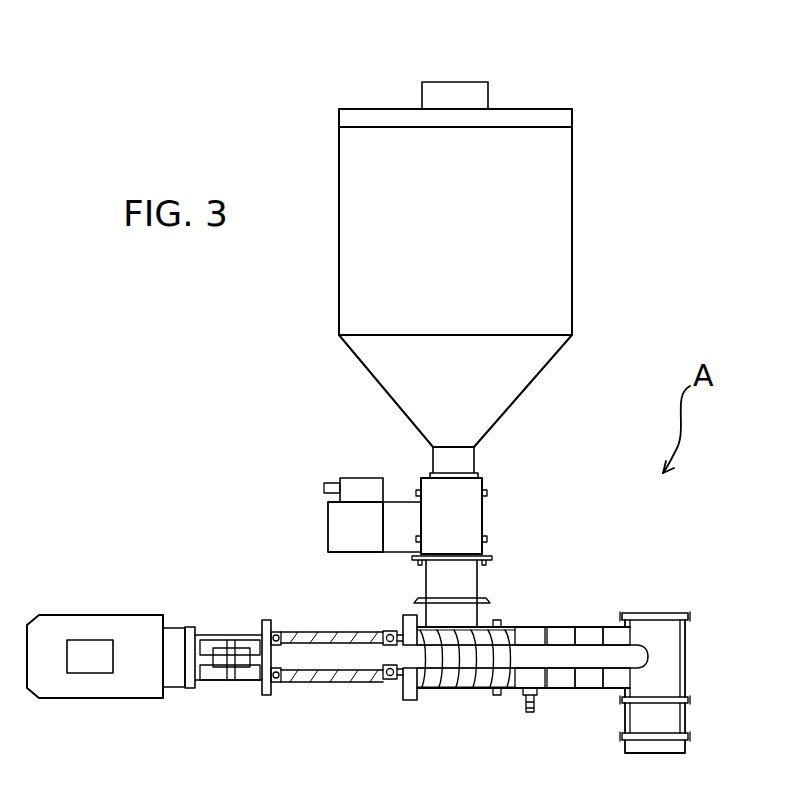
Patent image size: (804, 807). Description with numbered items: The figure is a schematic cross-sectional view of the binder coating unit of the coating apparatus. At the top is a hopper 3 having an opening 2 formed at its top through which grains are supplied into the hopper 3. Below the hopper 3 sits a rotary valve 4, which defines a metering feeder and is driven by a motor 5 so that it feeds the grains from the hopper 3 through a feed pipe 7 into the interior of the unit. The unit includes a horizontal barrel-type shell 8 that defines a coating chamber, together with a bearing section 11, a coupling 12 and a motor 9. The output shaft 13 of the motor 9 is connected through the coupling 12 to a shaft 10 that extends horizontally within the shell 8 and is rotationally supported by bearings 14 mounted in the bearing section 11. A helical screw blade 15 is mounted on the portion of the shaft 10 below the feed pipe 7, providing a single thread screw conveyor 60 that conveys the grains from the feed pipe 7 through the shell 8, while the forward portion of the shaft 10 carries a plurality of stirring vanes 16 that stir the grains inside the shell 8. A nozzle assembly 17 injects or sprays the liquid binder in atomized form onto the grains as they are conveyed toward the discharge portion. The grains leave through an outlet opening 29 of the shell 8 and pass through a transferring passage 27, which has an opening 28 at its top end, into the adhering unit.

The opening 2 is at (461, 81).
The hopper 3 is at (572, 303).
The rotary valve 4 is at (483, 514).
The motor 5 is at (328, 523).
The feed pipe 7 is at (425, 569).
The horizontal barrel-type shell 8 is at (530, 627).
The motor 9 is at (94, 615).
The shaft 10 is at (518, 627).
The bearing section 11 is at (331, 632).
The coupling 12 is at (222, 634).
The output shaft 13 is at (212, 634).
The bearings 14 is at (278, 630).
The helical screw blade 15 is at (480, 688).
The stirring vanes 16 is at (563, 627).
The nozzle assembly 17 is at (526, 698).
The transferring passage 27 is at (688, 701).
The opening 28 is at (648, 612).
The outlet opening 29 is at (628, 666).
The single thread screw conveyor 60 is at (460, 700).